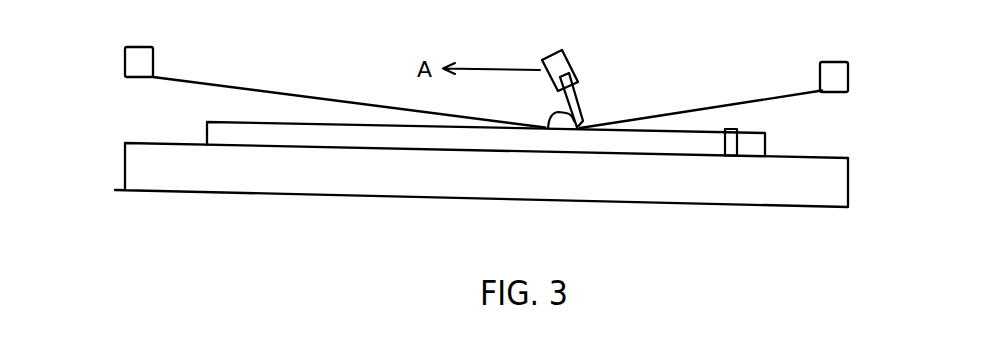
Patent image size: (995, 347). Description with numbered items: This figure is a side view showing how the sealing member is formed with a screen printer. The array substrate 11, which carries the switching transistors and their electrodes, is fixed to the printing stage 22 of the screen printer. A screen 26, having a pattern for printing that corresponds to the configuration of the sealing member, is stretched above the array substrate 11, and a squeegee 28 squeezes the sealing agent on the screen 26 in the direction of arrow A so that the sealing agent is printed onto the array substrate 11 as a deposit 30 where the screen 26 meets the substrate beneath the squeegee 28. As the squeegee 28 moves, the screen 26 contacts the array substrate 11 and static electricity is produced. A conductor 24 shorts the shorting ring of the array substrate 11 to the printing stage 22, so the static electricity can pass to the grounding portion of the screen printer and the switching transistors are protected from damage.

The array substrate 11 is at (766, 138).
The printing stage 22 is at (822, 208).
The conductor 24 is at (724, 143).
The screen 26 is at (770, 97).
The squeegee 28 is at (566, 52).
The bond 30 is at (548, 115).